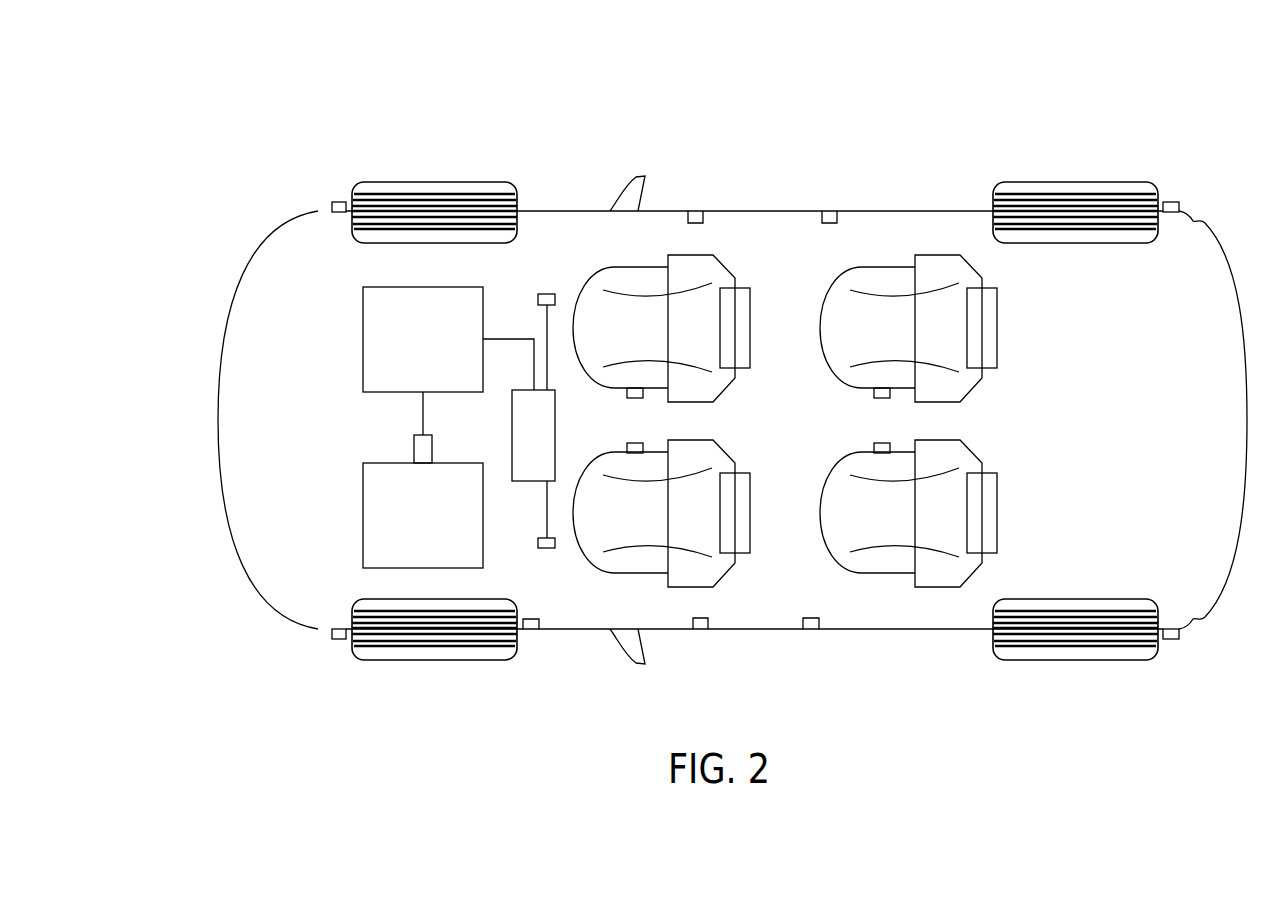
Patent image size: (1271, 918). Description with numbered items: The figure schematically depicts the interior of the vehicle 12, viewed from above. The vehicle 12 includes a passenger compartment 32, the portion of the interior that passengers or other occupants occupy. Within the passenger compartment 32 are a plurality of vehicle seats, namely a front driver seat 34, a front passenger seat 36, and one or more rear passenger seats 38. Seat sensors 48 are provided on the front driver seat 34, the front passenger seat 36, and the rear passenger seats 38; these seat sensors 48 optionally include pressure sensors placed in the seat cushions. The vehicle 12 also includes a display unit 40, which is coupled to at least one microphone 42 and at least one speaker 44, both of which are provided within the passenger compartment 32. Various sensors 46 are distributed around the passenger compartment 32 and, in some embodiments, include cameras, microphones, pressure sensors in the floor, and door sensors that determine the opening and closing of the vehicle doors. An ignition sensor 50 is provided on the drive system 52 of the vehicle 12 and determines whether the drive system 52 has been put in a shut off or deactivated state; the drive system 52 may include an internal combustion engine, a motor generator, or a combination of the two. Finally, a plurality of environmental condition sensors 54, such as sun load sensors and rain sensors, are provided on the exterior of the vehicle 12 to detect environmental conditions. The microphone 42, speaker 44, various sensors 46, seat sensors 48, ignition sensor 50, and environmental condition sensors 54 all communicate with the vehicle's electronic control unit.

The vehicle 12 is at (942, 110).
The passenger compartment 32 is at (779, 255).
The front driver seat 34 is at (724, 451).
The front passenger seat 36 is at (724, 392).
The rear passenger seats 38 is at (971, 392).
The display unit 40 is at (512, 440).
The microphone 42 is at (547, 294).
The speaker 44 is at (547, 548).
The various sensors 46 is at (695, 211).
The seat sensors 48 is at (634, 398).
The ignition sensor 50 is at (418, 435).
The drive system 52 is at (381, 463).
The environmental condition sensors 54 is at (332, 206).